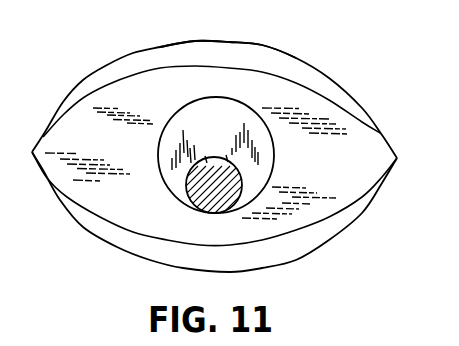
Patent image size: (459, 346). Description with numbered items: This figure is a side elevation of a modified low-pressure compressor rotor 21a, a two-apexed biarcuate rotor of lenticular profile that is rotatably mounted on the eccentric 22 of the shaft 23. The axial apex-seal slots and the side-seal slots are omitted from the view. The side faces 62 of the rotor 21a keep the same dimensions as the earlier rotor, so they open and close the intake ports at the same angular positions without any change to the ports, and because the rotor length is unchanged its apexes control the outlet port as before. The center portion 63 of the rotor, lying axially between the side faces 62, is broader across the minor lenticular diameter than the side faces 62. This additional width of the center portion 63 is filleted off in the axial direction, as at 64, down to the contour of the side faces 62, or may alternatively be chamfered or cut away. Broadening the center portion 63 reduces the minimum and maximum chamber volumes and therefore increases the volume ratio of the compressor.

The rotor 21a is at (252, 43).
The eccentric 22 is at (229, 140).
The shaft 23 is at (227, 195).
The side faces 62 is at (290, 93).
The center portion 63 is at (231, 41).
The fillet 64 is at (178, 58).